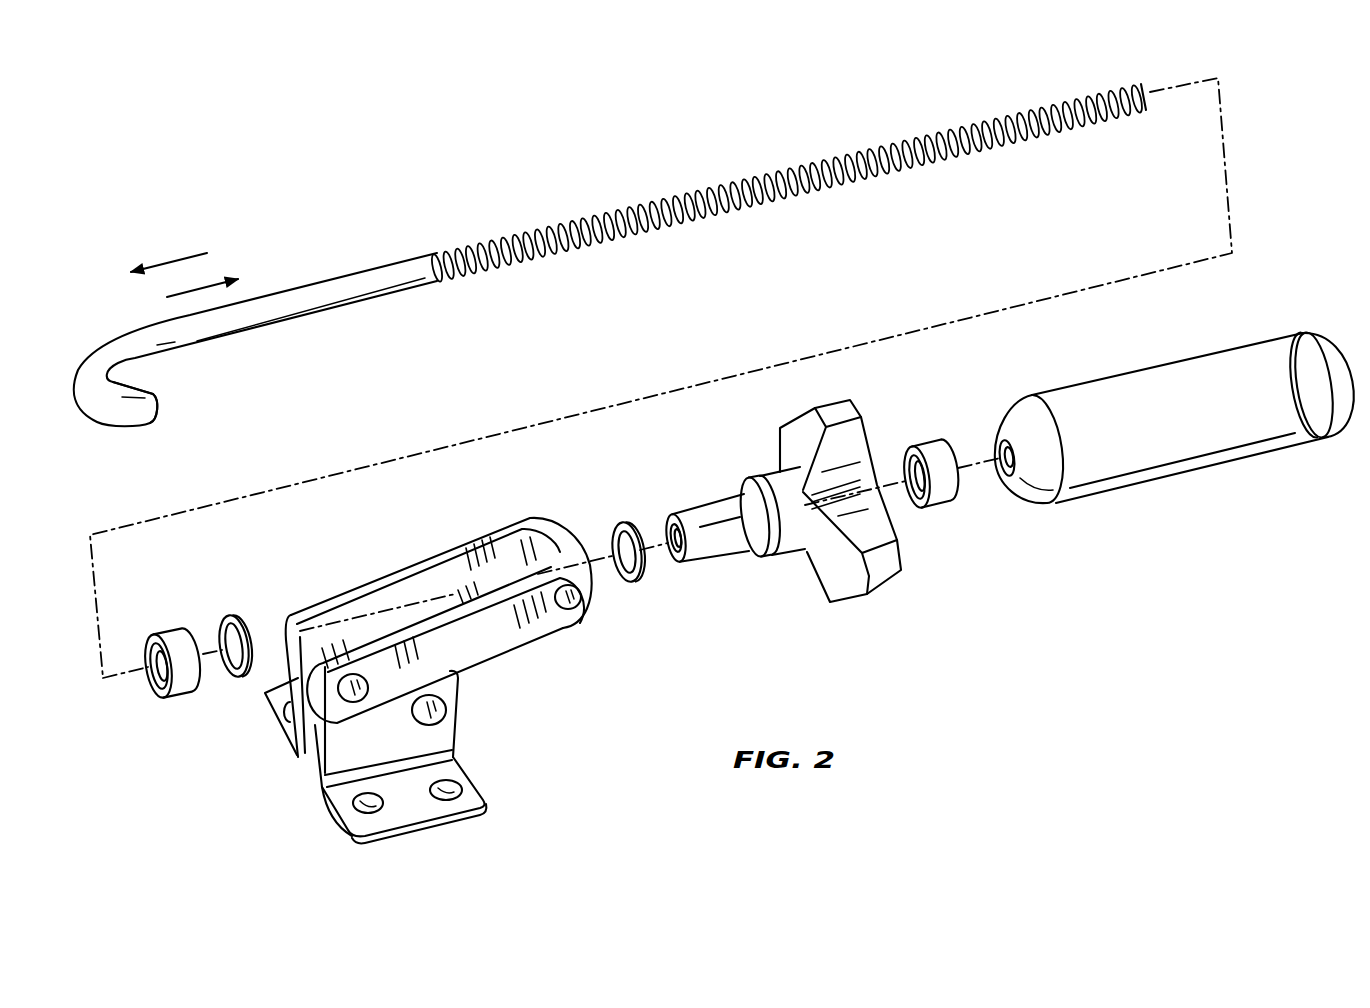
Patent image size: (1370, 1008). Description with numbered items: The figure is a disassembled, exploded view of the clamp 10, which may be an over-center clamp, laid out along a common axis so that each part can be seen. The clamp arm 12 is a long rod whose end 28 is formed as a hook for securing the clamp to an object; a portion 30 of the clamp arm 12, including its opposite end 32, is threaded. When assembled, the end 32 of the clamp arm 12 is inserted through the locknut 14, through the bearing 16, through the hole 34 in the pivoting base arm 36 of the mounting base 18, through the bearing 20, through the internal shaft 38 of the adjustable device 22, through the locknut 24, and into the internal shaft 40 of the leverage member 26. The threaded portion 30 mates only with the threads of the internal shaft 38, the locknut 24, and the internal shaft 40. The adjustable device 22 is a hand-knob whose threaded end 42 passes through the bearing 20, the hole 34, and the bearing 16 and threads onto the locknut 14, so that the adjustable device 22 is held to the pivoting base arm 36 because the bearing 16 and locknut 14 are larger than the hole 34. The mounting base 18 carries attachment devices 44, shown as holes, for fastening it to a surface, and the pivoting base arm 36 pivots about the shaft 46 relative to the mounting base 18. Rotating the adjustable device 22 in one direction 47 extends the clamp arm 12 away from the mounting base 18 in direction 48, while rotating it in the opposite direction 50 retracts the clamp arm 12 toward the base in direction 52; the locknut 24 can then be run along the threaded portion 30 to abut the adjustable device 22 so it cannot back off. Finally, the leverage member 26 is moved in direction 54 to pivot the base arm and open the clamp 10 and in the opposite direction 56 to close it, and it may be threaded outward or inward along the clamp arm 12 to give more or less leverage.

The clamp 10 is at (371, 173).
The clamp arm 12 is at (580, 248).
The locknut 14 is at (173, 633).
The bearing 16 is at (222, 623).
The mounting base 18 is at (420, 802).
The bearing 20 is at (617, 528).
The adjustable device 22 is at (842, 578).
The locknut 24 is at (943, 508).
The leverage member 26 is at (1157, 470).
The end 28 is at (153, 382).
The threaded portion 30 is at (432, 240).
The end 32 is at (1148, 100).
The hole 34 is at (555, 588).
The pivoting base arm 36 is at (483, 633).
The internal shaft 38 is at (668, 557).
The internal shaft 40 is at (1000, 445).
The threaded end 42 is at (715, 557).
The attachment devices 44 is at (280, 712).
The shaft 46 is at (350, 686).
The direction 47 is at (717, 463).
The direction 48 is at (170, 262).
The direction 50 is at (747, 587).
The direction 52 is at (208, 285).
The direction 54 is at (1298, 462).
The direction 56 is at (1272, 565).